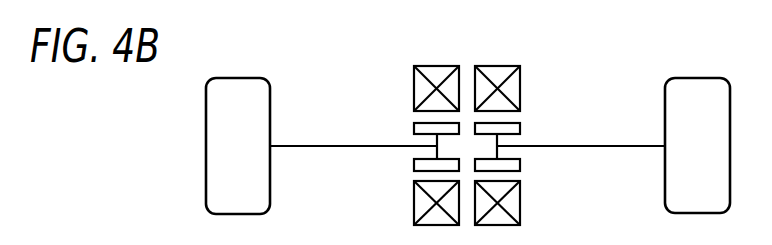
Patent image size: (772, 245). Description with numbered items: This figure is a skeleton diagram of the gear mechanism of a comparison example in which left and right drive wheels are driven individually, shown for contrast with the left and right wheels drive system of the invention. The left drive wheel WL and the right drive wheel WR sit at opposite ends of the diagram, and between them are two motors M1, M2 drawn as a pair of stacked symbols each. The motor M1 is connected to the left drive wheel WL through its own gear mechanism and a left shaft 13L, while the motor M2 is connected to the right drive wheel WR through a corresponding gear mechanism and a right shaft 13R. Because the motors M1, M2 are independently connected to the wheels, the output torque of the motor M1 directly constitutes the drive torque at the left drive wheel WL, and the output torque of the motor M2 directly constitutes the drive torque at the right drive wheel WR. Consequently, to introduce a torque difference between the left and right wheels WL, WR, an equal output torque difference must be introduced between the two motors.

The left drive wheel WL is at (234, 78).
The right drive wheel WR is at (697, 78).
The left drive shaft 13L is at (340, 143).
The right drive shaft 13R is at (595, 143).
The motor M1 is at (436, 131).
The motor M2 is at (497, 131).